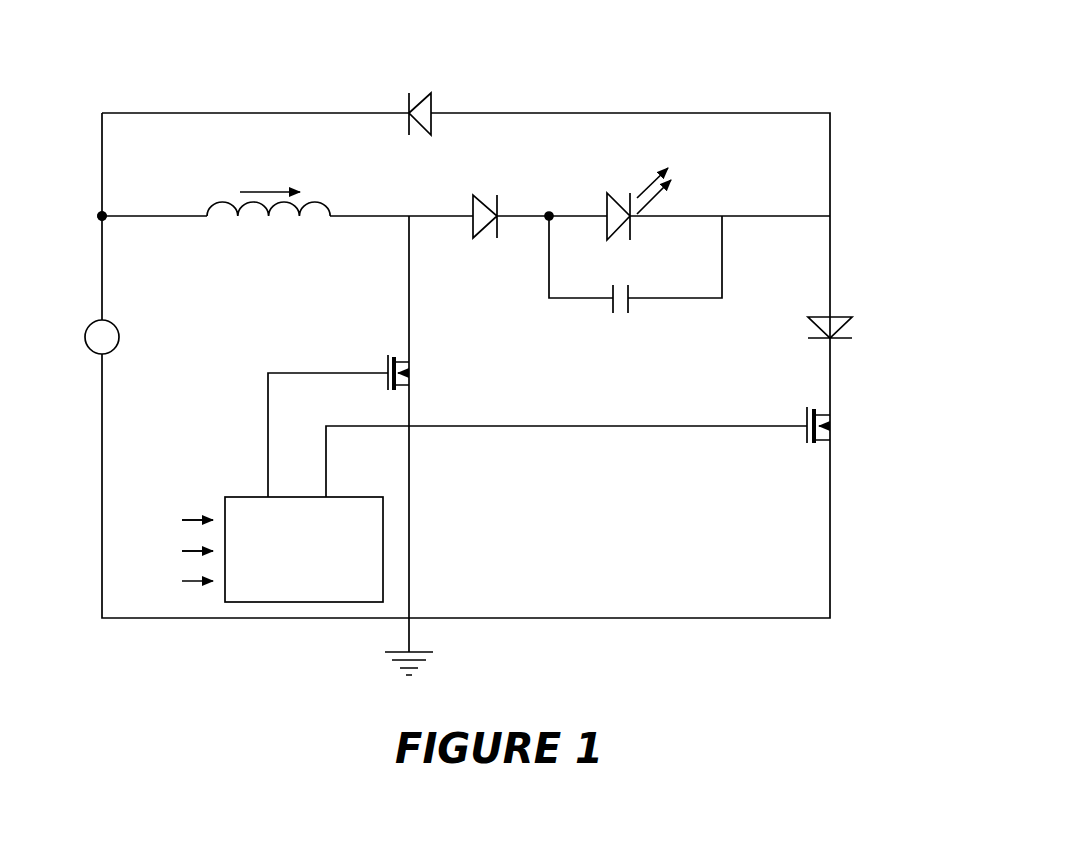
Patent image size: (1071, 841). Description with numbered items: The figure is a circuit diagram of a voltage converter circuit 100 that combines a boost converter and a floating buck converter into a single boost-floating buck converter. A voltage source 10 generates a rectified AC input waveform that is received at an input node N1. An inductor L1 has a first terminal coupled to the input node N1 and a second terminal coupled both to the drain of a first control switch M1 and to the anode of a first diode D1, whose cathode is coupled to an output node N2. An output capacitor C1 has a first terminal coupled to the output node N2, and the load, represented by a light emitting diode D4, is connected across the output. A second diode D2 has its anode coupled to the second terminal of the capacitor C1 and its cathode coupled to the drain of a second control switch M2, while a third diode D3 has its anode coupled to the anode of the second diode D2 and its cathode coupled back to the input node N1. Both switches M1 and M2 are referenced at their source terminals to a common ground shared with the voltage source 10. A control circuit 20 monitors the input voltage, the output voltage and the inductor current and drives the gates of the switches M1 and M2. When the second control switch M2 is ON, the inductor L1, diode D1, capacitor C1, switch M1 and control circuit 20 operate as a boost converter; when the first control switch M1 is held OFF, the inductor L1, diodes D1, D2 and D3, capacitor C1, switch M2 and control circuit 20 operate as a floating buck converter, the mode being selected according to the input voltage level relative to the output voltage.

The voltage converter circuit 100 is at (694, 82).
The voltage source 10 is at (86, 336).
The control circuit 20 is at (256, 549).
The input node N1 is at (100, 216).
The output node N2 is at (549, 216).
The inductor L1 is at (251, 213).
The first diode D1 is at (484, 198).
The second diode D2 is at (847, 329).
The third diode D3 is at (419, 132).
The light emitting diode D4 is at (637, 199).
The output capacitor C1 is at (635, 280).
The first control switch M1 is at (363, 416).
The second control switch M2 is at (602, 446).